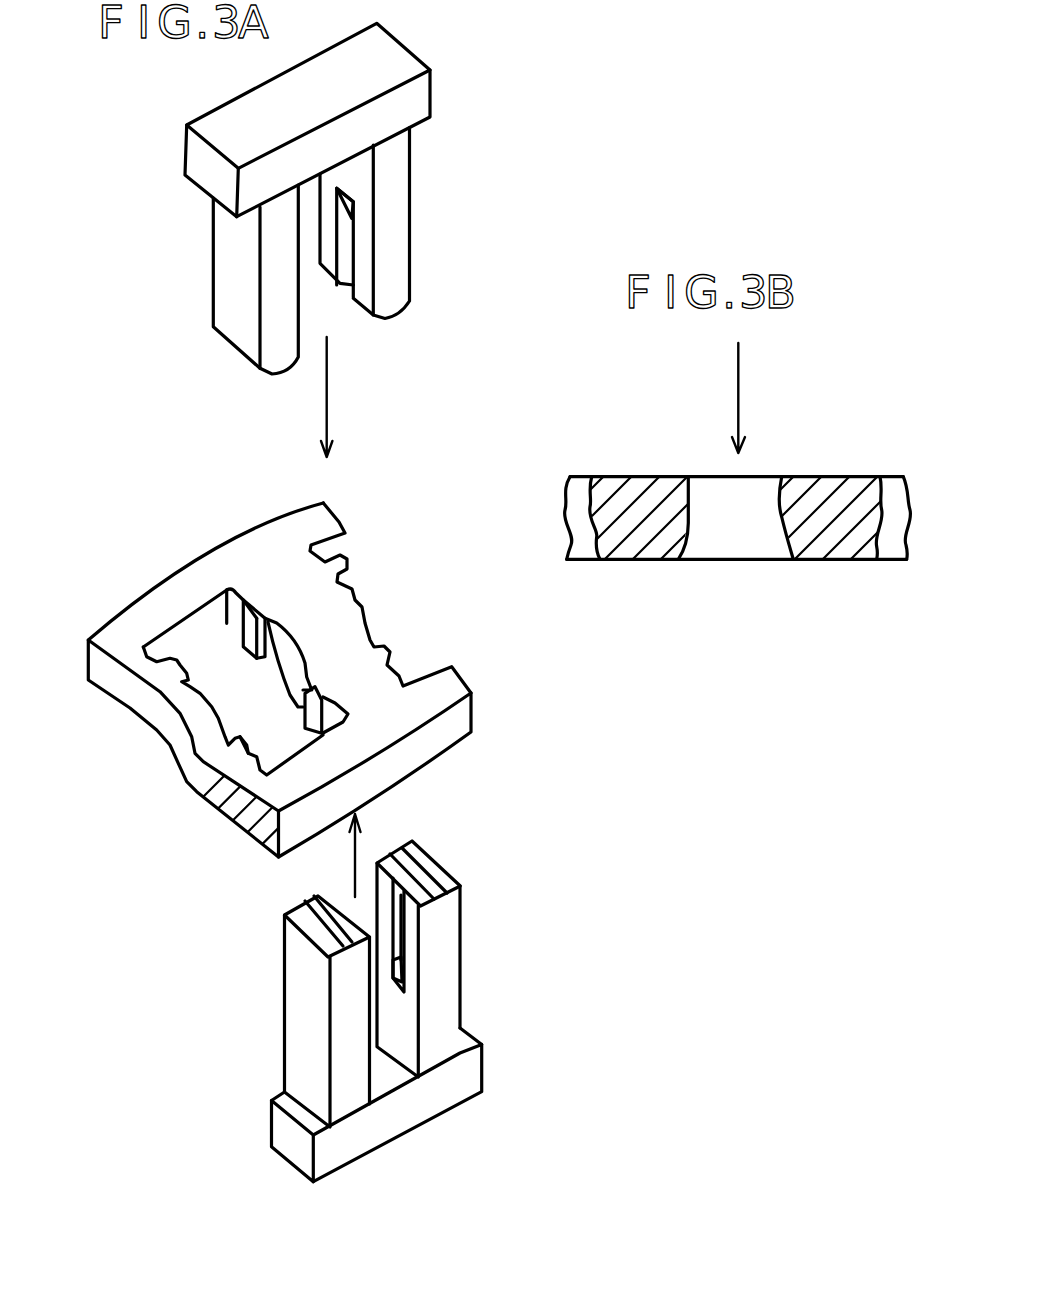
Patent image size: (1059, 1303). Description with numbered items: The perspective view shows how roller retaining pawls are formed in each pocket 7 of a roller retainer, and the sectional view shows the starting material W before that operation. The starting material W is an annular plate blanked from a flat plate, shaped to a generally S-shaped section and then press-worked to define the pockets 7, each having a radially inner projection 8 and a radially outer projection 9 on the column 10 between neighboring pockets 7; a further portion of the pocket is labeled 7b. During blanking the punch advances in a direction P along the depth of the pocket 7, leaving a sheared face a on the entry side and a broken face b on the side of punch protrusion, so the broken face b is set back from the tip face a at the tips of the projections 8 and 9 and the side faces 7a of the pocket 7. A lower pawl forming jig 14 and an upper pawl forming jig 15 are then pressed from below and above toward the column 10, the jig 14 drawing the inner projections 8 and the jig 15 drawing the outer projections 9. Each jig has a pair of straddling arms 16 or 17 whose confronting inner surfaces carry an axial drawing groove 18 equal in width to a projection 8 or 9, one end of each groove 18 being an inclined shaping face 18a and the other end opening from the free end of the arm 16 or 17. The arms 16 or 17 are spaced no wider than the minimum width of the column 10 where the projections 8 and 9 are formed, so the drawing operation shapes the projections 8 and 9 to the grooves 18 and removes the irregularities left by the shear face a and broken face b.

In FIG. 3A, the pocket 7 is at (221, 657).
In FIG. 3B, the pocket 7 is at (727, 497).
In FIG. 3A, the side faces of pocket 7a is at (303, 673).
In FIG. 3A, the lobe of opening 7b is at (173, 638).
In FIG. 3A, the radially inner projections 8 is at (335, 718).
In FIG. 3B, the radially inner projections 8 is at (680, 500).
In FIG. 3A, the radially outer projections 9 is at (257, 610).
In FIG. 3A, the column 10 is at (340, 630).
In FIG. 3B, the column 10 is at (627, 497).
In FIG. 3A, the pawl forming jig 14 is at (457, 1128).
In FIG. 3A, the pawl forming jig 15 is at (418, 205).
In FIG. 3A, the straddling arms 16 is at (445, 985).
In FIG. 3A, the straddling arms 17 is at (224, 262).
In FIG. 3A, the drawing groove 18 is at (344, 245).
In FIG. 3A, the inclined shaping face 18a is at (342, 192).
In FIG. 3A, the starting material W is at (117, 590).
In FIG. 3B, the starting material W is at (899, 453).
In FIG. 3B, the direction of punch advance P is at (740, 368).
In FIG. 3B, the sheared face a is at (778, 490).
In FIG. 3B, the broken face b is at (782, 560).